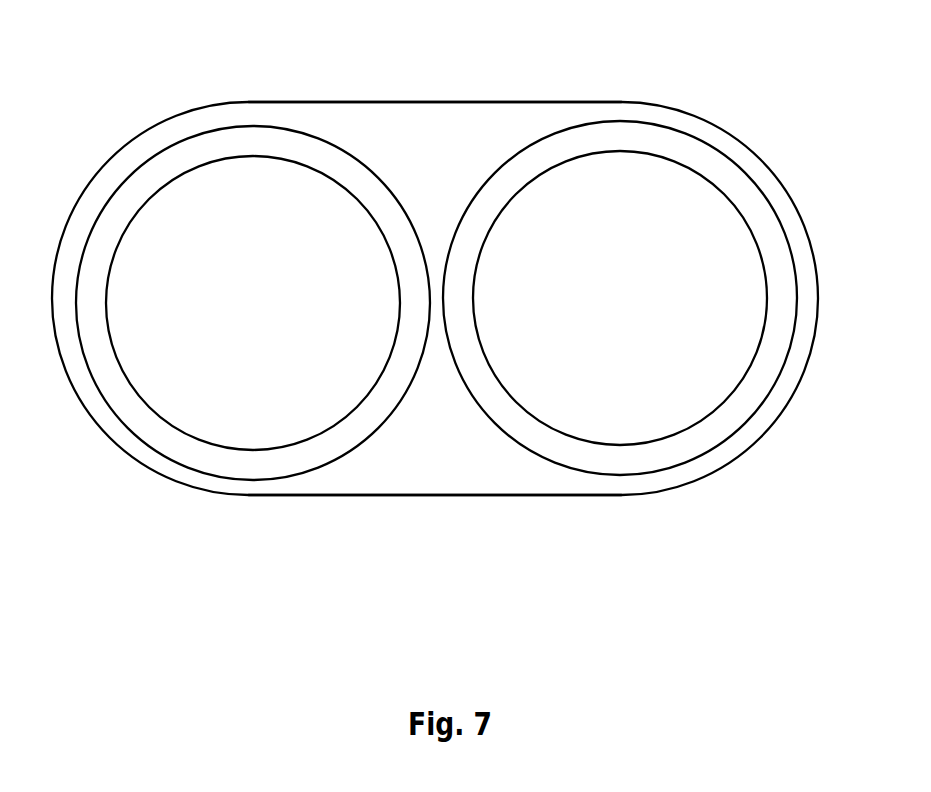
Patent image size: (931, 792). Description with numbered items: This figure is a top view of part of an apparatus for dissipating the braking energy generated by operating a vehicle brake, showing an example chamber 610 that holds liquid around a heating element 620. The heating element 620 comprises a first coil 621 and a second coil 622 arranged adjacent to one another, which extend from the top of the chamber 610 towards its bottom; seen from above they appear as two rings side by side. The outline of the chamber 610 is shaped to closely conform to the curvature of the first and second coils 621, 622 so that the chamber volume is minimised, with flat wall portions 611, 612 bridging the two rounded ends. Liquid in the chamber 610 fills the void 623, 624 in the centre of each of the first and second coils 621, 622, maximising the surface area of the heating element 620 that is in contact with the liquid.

The chamber 610 is at (692, 485).
The bottom flat wall of tube body 611 is at (328, 497).
The top flat wall of tube body 612 is at (439, 101).
The heating element 620 is at (437, 377).
The first coil 621 is at (192, 453).
The second coil 622 is at (628, 470).
The void 623 is at (241, 390).
The void 624 is at (658, 367).